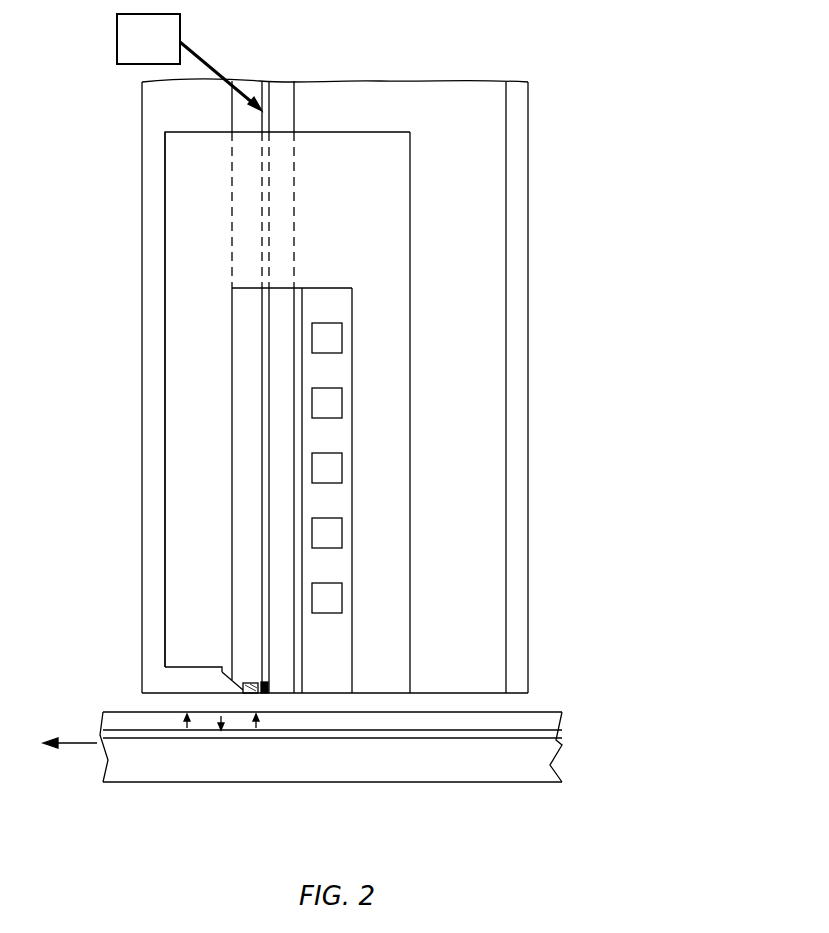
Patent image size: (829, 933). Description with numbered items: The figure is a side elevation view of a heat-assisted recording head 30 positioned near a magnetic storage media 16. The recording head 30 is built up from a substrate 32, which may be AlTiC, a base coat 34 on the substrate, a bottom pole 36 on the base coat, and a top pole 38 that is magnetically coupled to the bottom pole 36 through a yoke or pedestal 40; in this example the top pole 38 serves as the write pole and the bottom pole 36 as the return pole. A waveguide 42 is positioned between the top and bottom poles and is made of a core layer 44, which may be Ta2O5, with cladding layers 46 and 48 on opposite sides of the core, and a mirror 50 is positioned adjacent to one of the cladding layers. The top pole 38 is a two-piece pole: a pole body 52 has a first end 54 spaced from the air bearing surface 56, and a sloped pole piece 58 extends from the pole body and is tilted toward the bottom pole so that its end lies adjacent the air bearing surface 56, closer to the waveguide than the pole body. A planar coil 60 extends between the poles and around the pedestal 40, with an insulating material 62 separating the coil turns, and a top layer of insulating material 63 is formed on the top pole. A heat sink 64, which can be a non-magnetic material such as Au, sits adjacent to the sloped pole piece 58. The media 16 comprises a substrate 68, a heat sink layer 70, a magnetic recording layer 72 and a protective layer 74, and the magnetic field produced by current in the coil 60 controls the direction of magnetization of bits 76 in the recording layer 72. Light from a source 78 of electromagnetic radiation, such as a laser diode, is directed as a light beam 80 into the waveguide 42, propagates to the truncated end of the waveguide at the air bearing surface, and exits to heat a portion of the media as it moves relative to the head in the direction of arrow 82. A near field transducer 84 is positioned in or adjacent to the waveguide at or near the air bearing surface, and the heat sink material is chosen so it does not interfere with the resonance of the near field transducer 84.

The magnetic storage media 16 is at (563, 707).
The recording head 30 is at (100, 149).
The substrate 32 is at (517, 95).
The base coat 34 is at (462, 100).
The bottom pole 36 is at (400, 428).
The top pole 38 is at (172, 472).
The pedestal 40 is at (347, 143).
The waveguide 42 is at (294, 72).
The core layer 44 is at (263, 364).
The cladding layer 46 is at (276, 320).
The cladding layer 48 is at (242, 414).
The mirror 50 is at (298, 292).
The pole body 52 is at (172, 573).
The first end 54 is at (177, 678).
The air bearing surface 56 is at (330, 695).
The sloped pole piece 58 is at (243, 684).
The planar coil 60 is at (342, 470).
The insulating material 62 is at (345, 657).
The top layer of insulating material 63 is at (157, 217).
The heat sink 64 is at (260, 683).
The substrate 68 is at (508, 765).
The heat sink layer 70 is at (558, 738).
The magnetic recording layer 72 is at (553, 726).
The protective layer 74 is at (543, 712).
The bits 76 is at (185, 718).
The source of electromagnetic radiation 78 is at (117, 41).
The light beam 80 is at (208, 63).
The arrow 82 is at (74, 744).
The near field transducer 84 is at (269, 688).